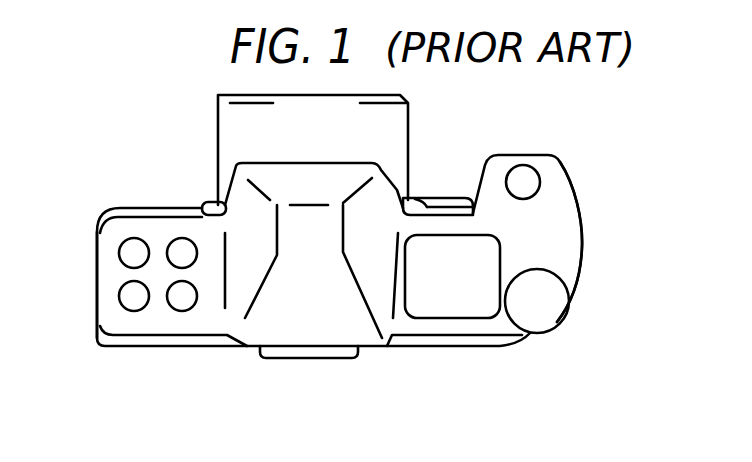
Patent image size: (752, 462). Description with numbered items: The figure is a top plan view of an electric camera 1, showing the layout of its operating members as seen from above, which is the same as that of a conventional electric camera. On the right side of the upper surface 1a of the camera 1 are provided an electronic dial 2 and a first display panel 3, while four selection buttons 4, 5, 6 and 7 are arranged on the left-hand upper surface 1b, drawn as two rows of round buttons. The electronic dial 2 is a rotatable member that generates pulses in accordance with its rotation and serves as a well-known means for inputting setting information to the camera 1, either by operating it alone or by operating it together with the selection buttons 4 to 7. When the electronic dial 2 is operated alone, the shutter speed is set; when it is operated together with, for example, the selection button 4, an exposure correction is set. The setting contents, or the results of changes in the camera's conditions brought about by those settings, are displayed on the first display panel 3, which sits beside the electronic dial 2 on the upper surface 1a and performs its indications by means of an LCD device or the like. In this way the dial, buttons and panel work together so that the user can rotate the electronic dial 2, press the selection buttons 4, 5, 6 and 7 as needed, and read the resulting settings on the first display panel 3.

The camera 1 is at (588, 198).
The upper surface 1a is at (562, 253).
The left-hand upper surface 1b is at (112, 267).
The electronic dial 2 is at (545, 310).
The first display panel 3 is at (463, 305).
The selection button 4 is at (182, 300).
The selection button 5 is at (135, 300).
The selection button 6 is at (135, 247).
The selection button 7 is at (182, 247).